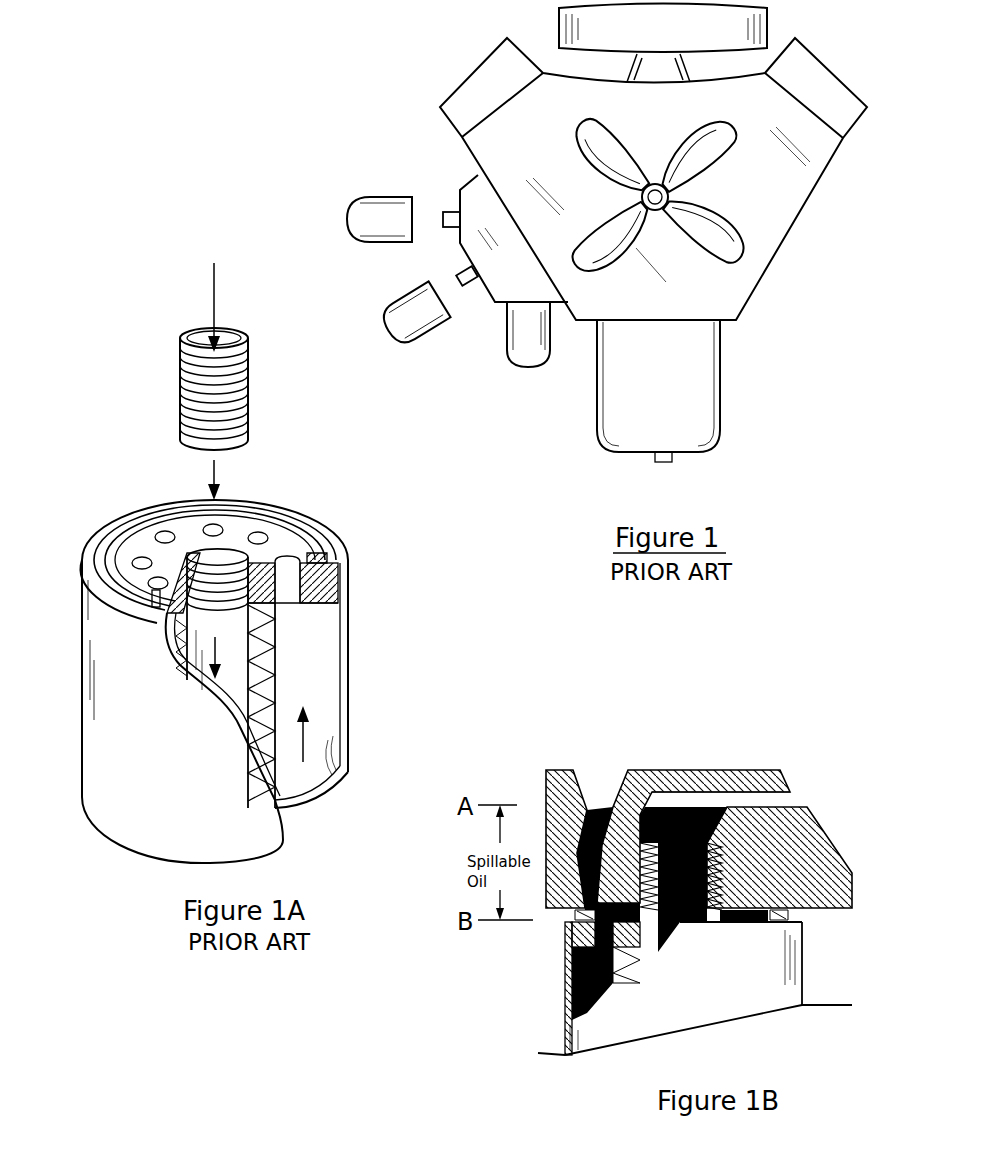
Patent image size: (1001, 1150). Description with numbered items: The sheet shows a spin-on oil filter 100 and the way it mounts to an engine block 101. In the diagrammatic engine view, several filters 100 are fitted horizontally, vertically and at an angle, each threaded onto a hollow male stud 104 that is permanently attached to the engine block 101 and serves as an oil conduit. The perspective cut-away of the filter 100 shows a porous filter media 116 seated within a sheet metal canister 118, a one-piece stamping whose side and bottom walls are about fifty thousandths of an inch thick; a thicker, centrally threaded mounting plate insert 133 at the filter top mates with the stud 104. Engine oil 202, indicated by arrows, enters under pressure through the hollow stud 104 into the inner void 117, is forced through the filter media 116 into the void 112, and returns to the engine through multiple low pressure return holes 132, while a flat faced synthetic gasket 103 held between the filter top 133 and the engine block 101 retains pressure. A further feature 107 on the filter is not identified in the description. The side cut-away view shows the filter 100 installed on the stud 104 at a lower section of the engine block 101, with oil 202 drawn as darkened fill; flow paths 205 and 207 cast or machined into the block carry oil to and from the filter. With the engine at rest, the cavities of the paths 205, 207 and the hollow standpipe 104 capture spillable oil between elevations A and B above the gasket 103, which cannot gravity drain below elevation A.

In FIG. 1, the spin-on filter 100 is at (472, 364).
In FIG. 1A, the spin-on filter 100 is at (143, 885).
In FIG. 1B, the spin-on filter 100 is at (533, 1036).
In FIG. 1, the engine block 101 is at (755, 195).
In FIG. 1B, the engine block 101 is at (653, 770).
In FIG. 1A, the flat faced synthetic gasket 103 is at (260, 512).
In FIG. 1B, the flat faced synthetic gasket 103 is at (777, 913).
In FIG. 1, the hollow male stud 104 is at (443, 212).
In FIG. 1A, the hollow male stud 104 is at (180, 365).
In FIG. 1B, the hollow male stud 104 is at (707, 873).
In FIG. 1A, the filter housing bottom 107 is at (293, 807).
In FIG. 1A, the void 112 is at (323, 732).
In FIG. 1A, the porous filter media 116 is at (270, 698).
In FIG. 1A, the inner void 117 is at (227, 623).
In FIG. 1A, the sheet metal canister 118 is at (118, 815).
In FIG. 1B, the sheet metal canister 118 is at (565, 990).
In FIG. 1A, the low pressure return holes 132 is at (163, 537).
In FIG. 1A, the centrally threaded mounting plate insert 133 is at (343, 577).
In FIG. 1A, the engine oil 202 is at (210, 300).
In FIG. 1B, the engine oil 202 is at (687, 830).
In FIG. 1B, the flow path 205 is at (793, 797).
In FIG. 1B, the flow path 207 is at (602, 778).